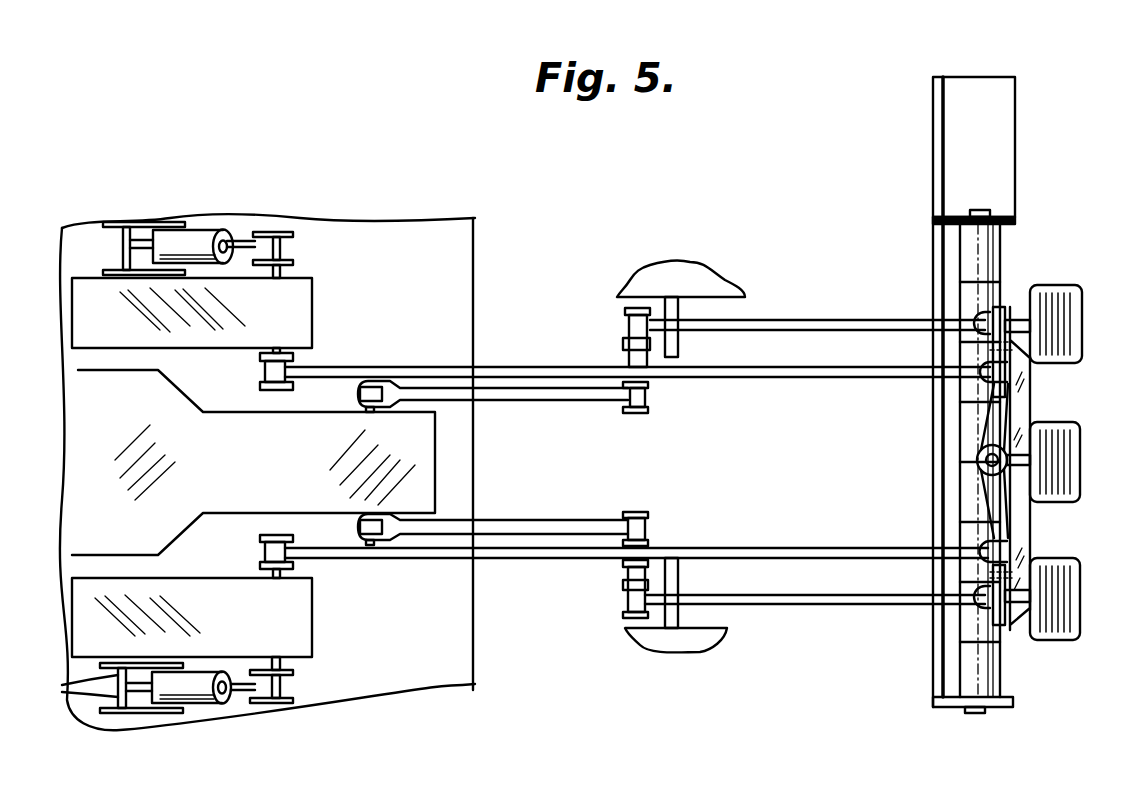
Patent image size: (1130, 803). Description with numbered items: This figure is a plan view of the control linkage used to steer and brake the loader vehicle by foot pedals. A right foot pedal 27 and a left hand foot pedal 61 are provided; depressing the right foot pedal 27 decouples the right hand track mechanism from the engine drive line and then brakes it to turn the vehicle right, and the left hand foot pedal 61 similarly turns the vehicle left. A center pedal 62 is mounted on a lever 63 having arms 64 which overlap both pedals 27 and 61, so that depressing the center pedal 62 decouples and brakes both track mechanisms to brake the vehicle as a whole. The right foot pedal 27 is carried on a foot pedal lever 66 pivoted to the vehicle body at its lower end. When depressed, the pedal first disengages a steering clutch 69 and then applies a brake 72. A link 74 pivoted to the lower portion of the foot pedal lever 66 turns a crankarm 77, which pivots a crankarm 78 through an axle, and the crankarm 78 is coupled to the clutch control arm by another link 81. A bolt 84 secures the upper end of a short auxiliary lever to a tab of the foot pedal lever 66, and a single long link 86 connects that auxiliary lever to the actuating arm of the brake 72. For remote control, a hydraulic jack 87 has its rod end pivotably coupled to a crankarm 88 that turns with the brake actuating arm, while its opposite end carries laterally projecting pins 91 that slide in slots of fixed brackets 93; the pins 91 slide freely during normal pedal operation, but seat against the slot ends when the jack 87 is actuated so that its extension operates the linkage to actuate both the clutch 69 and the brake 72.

The right foot pedal 27 is at (1062, 598).
The left hand foot pedal 61 is at (1062, 331).
The center pedal 62 is at (1062, 462).
The lever 63 is at (1026, 438).
The arms 64 is at (1010, 490).
The foot pedal lever 66 is at (1022, 614).
The steering clutch 69 is at (276, 472).
The brake 72 is at (278, 316).
The link 74 is at (815, 321).
The crankarm 77 is at (624, 612).
The crankarm 78 is at (648, 513).
The link 81 is at (535, 401).
The bolt 84 is at (985, 575).
The long link 86 is at (515, 346).
The hydraulic jack 87 is at (192, 237).
The crankarm 88 is at (272, 703).
The pins 91 is at (71, 691).
The fixed brackets 93 is at (103, 713).